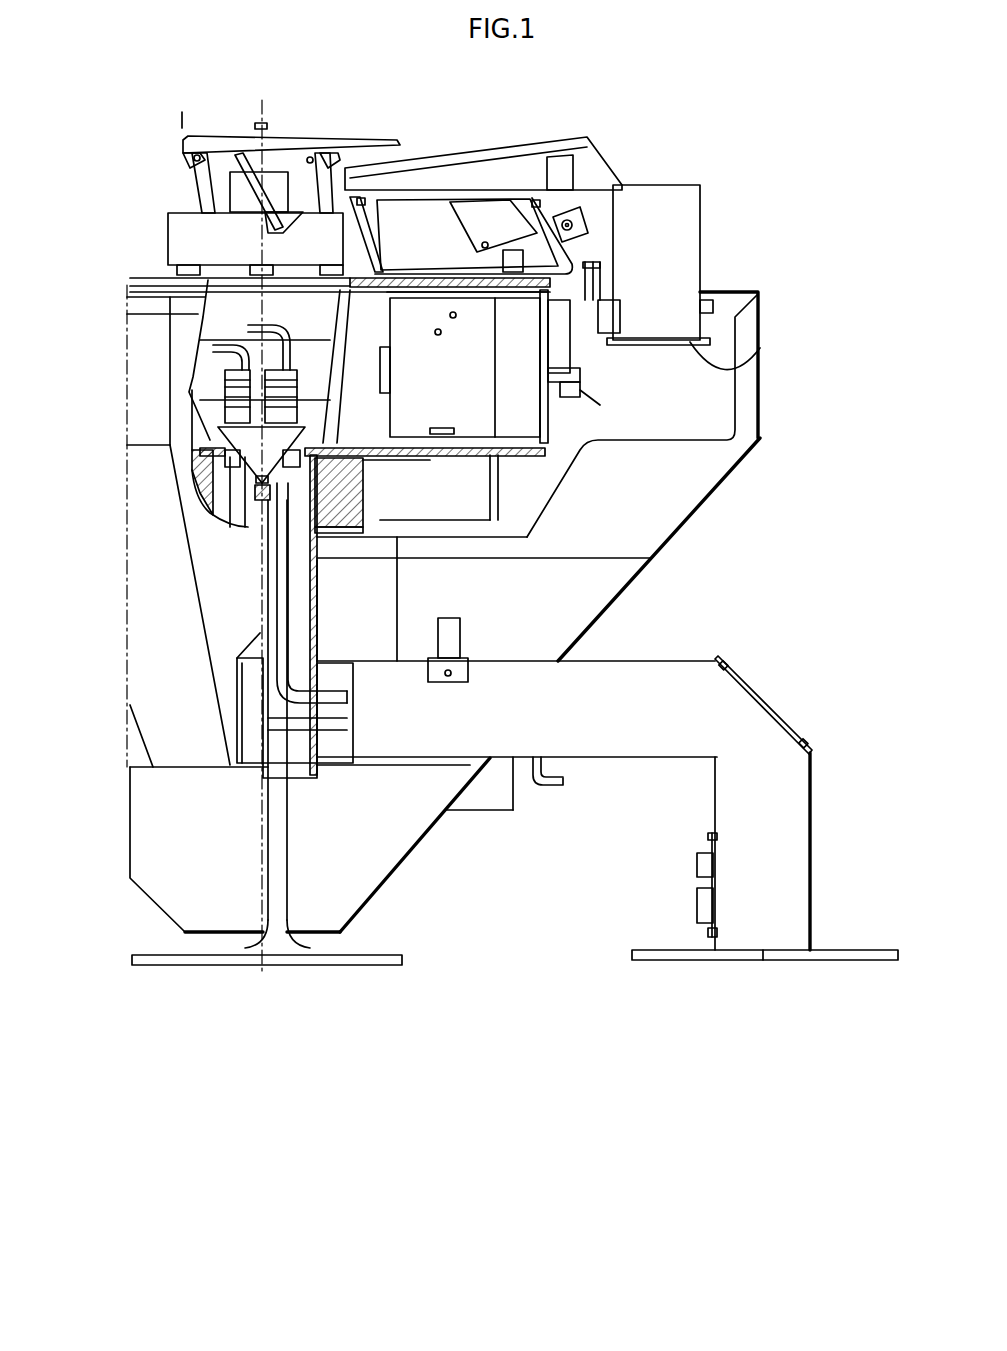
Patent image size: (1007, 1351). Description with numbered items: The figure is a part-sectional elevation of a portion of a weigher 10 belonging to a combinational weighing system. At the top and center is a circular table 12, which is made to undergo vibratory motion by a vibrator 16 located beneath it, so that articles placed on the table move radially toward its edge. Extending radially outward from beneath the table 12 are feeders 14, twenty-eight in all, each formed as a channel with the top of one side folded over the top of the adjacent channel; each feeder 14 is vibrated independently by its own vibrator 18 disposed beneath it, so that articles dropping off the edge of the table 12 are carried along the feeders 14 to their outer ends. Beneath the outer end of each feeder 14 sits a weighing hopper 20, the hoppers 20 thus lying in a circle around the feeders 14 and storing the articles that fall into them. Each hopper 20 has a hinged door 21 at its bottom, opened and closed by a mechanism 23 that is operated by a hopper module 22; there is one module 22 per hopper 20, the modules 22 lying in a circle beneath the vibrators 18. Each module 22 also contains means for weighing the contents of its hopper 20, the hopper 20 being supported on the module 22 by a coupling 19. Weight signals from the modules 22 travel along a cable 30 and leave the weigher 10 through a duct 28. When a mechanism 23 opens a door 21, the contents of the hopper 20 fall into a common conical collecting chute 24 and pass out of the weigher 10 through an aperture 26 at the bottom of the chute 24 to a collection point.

The weigher 10 is at (667, 138).
The circular table 12 is at (341, 143).
The feeder 14 is at (500, 168).
The vibrator 16 is at (267, 223).
The vibrator 18 is at (447, 238).
The coupling 19 is at (600, 405).
The weighing hopper 20 is at (690, 246).
The hinged door 21 is at (757, 353).
The hopper module 22 is at (475, 403).
The mechanism 23 is at (600, 363).
The conical collecting chute 24 is at (588, 606).
The aperture 26 is at (320, 935).
The duct 28 is at (727, 802).
The cable 30 is at (283, 690).